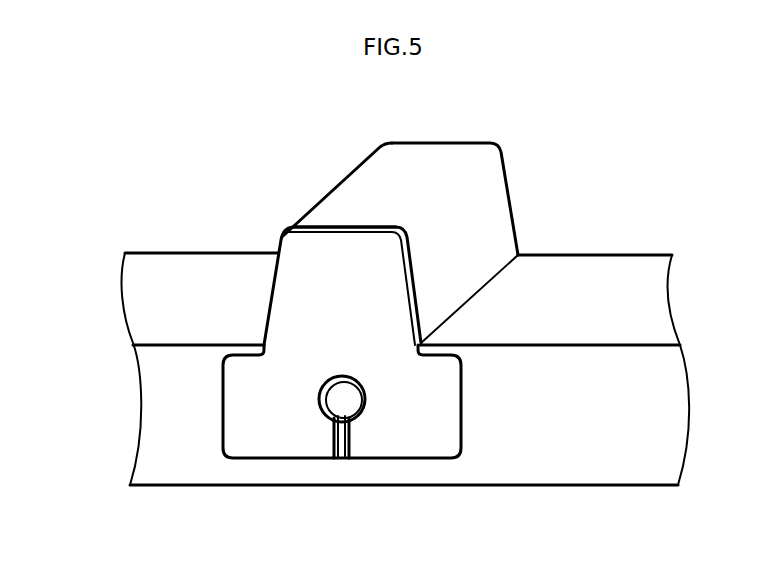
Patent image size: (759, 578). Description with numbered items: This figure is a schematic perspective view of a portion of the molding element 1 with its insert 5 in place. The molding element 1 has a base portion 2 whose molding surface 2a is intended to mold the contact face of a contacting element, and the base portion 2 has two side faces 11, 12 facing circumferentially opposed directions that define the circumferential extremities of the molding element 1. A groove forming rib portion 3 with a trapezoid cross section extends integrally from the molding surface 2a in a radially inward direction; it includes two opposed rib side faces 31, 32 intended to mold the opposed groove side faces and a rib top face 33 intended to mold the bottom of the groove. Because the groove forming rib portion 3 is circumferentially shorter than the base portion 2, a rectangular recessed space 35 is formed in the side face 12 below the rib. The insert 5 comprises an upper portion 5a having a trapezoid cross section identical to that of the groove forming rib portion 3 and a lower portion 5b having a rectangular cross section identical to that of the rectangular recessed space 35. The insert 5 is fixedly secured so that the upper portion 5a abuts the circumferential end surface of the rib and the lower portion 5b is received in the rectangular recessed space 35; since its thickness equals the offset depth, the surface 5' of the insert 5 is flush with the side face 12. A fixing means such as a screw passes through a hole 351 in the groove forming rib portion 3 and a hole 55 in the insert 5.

The molding element 1 is at (575, 122).
The base portion 2 is at (613, 243).
The molding surface 2a is at (210, 297).
The groove forming rib portion 3 is at (299, 208).
The insert 5 is at (241, 383).
The surface of the insert 5' is at (344, 272).
The upper portion 5a is at (295, 305).
The lower portion 5b is at (250, 384).
The side face 11 is at (667, 258).
The side face 12 is at (580, 441).
The rib side face 31 is at (368, 157).
The rib side face 32 is at (488, 233).
The rib top face 33 is at (430, 163).
The rectangular recessed space 35 is at (346, 459).
The hole 55 is at (338, 392).
The hole 351 is at (346, 402).